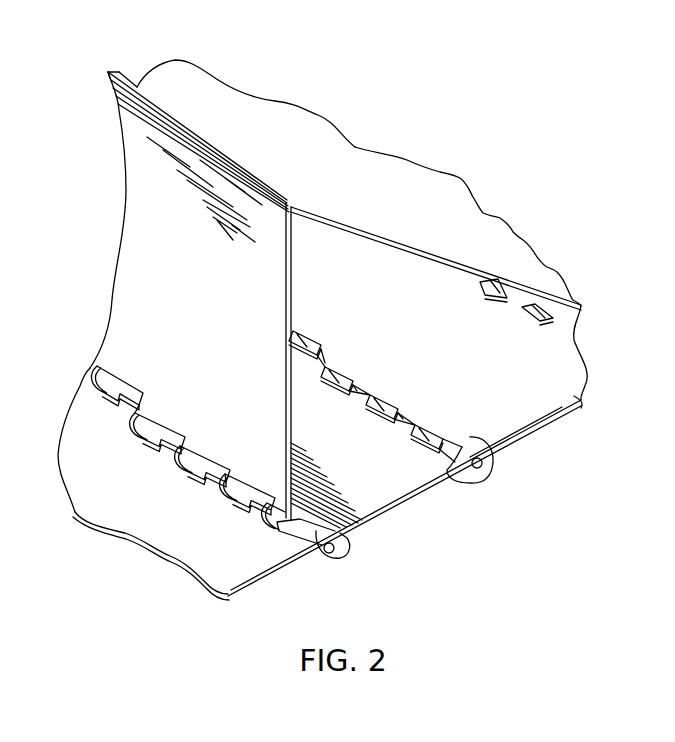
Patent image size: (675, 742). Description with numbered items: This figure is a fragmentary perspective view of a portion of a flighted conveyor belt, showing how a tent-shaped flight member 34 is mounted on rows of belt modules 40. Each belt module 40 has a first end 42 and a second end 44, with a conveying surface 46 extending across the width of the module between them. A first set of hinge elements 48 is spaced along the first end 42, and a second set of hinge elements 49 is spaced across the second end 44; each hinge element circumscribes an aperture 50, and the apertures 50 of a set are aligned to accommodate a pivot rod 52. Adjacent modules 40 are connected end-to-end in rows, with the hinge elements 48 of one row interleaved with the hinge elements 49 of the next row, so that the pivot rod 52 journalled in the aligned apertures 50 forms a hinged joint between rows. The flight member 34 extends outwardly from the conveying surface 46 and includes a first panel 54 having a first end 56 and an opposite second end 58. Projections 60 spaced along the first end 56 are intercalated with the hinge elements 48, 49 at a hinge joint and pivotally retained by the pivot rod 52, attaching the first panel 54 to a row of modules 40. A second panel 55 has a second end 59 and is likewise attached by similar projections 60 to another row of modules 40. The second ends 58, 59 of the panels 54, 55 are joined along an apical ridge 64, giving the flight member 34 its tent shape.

The flight member 34 is at (250, 146).
The belt module 40 is at (415, 336).
The first end 42 is at (357, 521).
The second end 44 is at (498, 440).
The conveying surface 46 is at (579, 398).
The first set of hinge elements 48 is at (98, 400).
The second set of hinge elements 49 is at (256, 507).
The aperture 50 is at (330, 561).
The pivot rod 52 is at (482, 479).
The first panel 54 is at (147, 175).
The second panel 55 is at (365, 148).
The first end of first panel 56 is at (110, 346).
The second end of first panel 58 is at (110, 86).
The second end of second panel 59 is at (163, 73).
The projections 60 is at (168, 462).
The apical ridge 64 is at (139, 84).